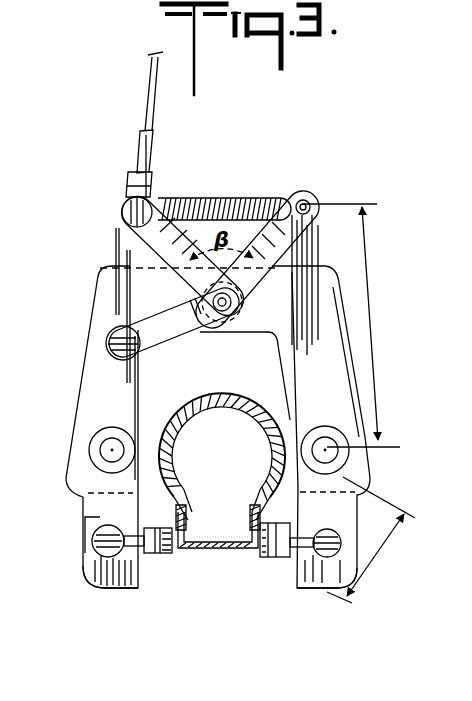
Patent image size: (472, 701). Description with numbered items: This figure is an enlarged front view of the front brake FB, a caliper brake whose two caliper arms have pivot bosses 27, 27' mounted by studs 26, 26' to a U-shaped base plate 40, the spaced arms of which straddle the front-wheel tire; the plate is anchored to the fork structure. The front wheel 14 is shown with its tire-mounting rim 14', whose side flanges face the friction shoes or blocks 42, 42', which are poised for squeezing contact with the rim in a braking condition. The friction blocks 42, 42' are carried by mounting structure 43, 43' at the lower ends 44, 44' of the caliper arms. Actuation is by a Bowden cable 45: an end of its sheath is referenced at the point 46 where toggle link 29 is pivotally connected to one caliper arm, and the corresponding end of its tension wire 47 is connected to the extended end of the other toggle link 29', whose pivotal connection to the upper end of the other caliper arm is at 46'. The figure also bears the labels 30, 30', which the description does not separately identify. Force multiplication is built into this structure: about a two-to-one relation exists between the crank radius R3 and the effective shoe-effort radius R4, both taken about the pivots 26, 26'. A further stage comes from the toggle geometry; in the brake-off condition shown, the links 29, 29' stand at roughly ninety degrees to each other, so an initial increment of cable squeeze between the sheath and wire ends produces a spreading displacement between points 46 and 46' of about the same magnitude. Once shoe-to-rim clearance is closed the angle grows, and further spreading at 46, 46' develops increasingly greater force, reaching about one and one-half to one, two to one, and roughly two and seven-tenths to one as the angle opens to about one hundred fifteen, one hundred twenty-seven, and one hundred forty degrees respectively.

The wheel rim 14 is at (222, 443).
The tire-mounting rim 14' is at (218, 548).
The stud 26 is at (112, 436).
The stud 26' is at (325, 427).
The pivot boss 27 is at (83, 408).
The pivot boss 27' is at (352, 401).
The toggle link 29 is at (183, 237).
The toggle link 29' is at (257, 259).
The link 30 is at (172, 323).
The link / spring 30' is at (224, 186).
The U-shaped base plate 40 is at (165, 347).
The friction shoe 42 is at (192, 494).
The friction shoe 42' is at (245, 492).
The mounting structure 43 is at (102, 536).
The mounting structure 43' is at (292, 570).
The lower end of caliper arm 44 is at (110, 598).
The lower end of caliper arm 44' is at (324, 604).
The Bowden cable 45 is at (157, 158).
The sheath reference point 46 is at (159, 187).
The pivotal connection 46' is at (327, 181).
The tension wire 47 is at (146, 88).
The front brake FB is at (299, 153).
The crank radius R3 is at (368, 277).
The effective shoe-effort radius R4 is at (370, 573).